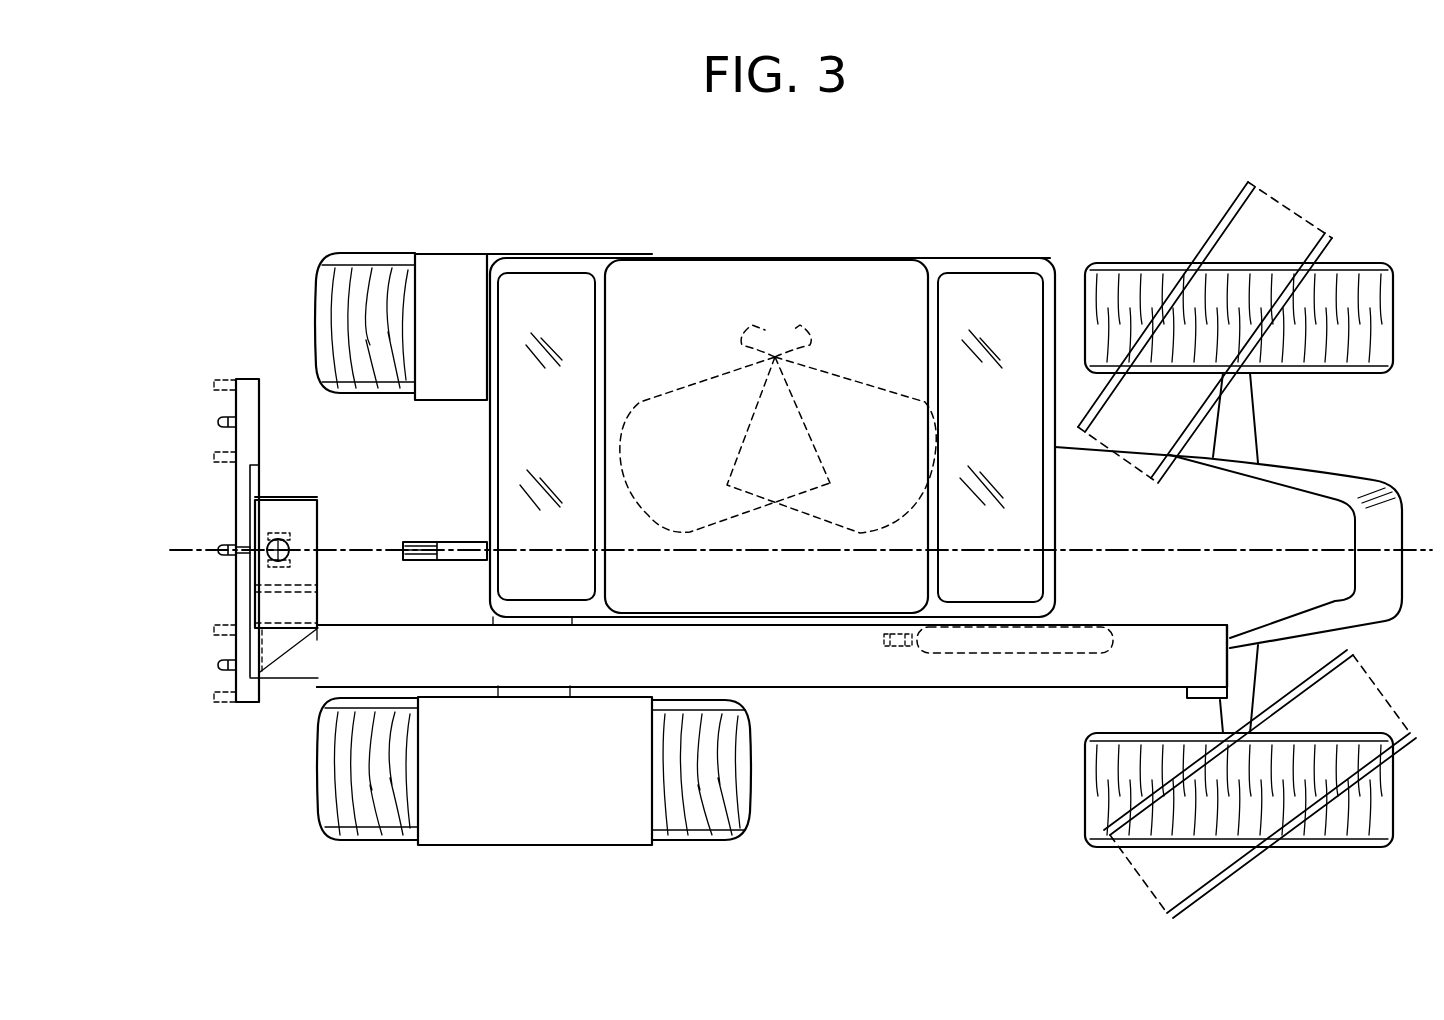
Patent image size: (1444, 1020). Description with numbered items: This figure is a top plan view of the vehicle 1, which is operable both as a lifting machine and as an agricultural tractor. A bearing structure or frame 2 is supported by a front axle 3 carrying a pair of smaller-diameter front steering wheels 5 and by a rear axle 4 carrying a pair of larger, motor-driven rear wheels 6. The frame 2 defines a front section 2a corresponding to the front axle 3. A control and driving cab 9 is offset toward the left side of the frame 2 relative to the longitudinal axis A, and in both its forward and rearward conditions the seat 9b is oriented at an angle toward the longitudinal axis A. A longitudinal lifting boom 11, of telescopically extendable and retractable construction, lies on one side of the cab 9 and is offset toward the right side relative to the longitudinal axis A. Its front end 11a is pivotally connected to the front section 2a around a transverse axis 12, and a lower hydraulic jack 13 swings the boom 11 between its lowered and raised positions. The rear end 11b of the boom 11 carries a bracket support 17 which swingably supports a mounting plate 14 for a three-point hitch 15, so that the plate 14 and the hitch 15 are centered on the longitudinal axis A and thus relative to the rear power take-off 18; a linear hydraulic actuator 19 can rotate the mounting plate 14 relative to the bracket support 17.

The vehicle 1 is at (1010, 220).
The bearing structure 2 is at (1302, 456).
The front section 2a is at (1358, 624).
The front axle 3 is at (1248, 668).
The rear axle 4 is at (558, 692).
The front steering wheels 5 is at (1345, 280).
The rear wheels 6 is at (363, 278).
The control and driving cab 9 is at (665, 282).
The operator seat 9b is at (806, 355).
The longitudinal lifting boom 11 is at (876, 695).
The front end of the lifting boom 11a is at (1147, 645).
The rear end of the lifting boom 11b is at (338, 662).
The transverse axis 12 is at (1192, 698).
The lower hydraulic jack 13 is at (973, 642).
The mounting plate 14 is at (242, 385).
The three-point hitch 15 is at (222, 548).
The bracket support 17 is at (307, 603).
The rear power take-off 18 is at (448, 542).
The linear hydraulic actuator 19 is at (278, 535).
The longitudinal axis A is at (1270, 550).